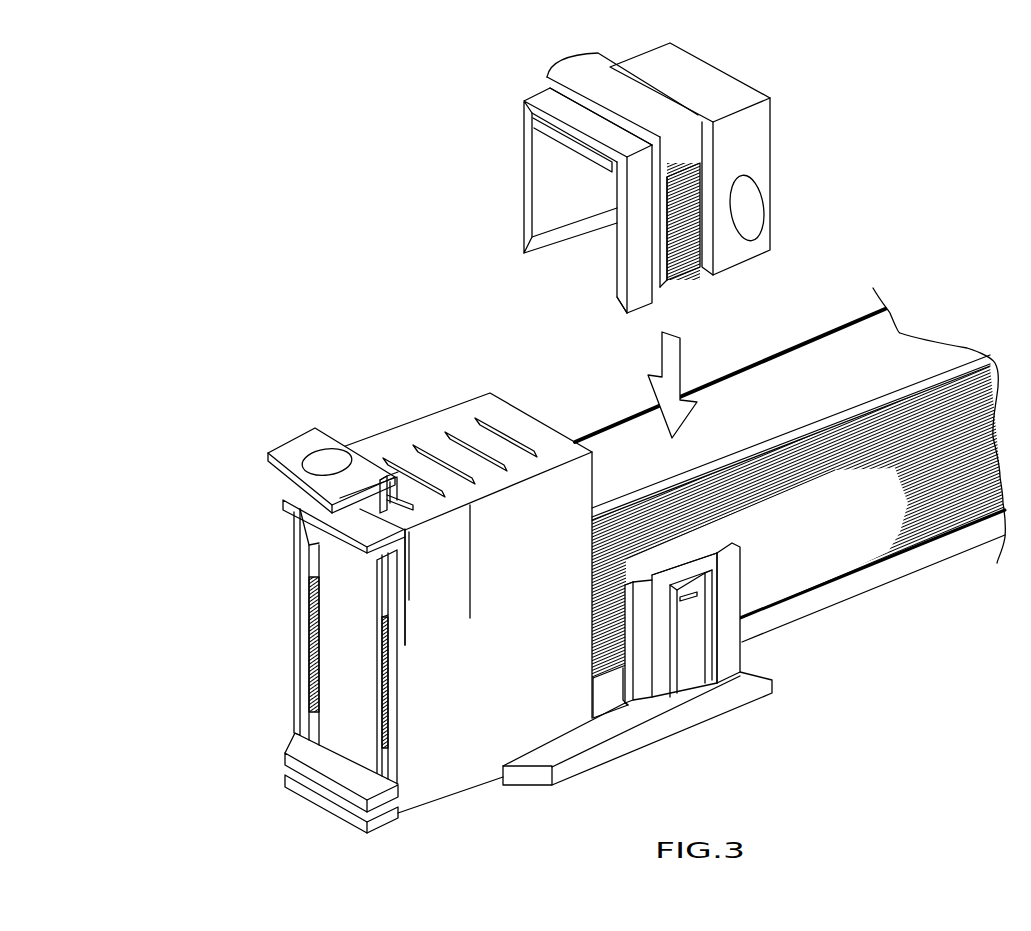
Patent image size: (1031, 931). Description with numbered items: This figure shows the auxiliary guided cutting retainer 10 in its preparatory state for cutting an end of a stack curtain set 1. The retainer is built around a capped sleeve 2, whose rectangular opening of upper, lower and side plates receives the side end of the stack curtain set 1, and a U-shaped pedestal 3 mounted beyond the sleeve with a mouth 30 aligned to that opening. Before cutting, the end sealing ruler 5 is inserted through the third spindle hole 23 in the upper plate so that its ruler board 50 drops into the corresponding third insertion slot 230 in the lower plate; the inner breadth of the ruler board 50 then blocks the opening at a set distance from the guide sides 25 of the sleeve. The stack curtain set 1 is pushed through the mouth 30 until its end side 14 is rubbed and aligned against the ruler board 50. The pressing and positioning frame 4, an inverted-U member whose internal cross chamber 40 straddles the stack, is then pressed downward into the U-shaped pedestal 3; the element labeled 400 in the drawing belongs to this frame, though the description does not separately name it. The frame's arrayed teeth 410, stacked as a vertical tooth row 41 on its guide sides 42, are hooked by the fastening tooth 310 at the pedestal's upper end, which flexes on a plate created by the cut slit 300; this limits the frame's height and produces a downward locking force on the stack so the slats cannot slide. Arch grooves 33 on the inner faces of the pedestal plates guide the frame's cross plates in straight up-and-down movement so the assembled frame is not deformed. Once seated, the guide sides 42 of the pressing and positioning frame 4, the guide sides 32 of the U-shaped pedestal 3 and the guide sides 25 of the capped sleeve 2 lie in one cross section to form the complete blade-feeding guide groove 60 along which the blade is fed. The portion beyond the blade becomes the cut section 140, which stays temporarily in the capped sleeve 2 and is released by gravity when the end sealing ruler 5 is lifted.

The stack curtain set 1 is at (891, 350).
The capped sleeve 2 is at (467, 418).
The U-shaped pedestal 3 is at (405, 645).
The pressing and positioning frame 4 is at (641, 175).
The end sealing ruler 5 is at (333, 437).
The auxiliary guided cutting retainer 10 is at (276, 583).
The end side 14 is at (315, 570).
The third spindle hole 23 is at (364, 497).
The guide sides 25 is at (593, 638).
The mouth 30 is at (733, 590).
The guide sides 32 is at (633, 643).
The arch grooves 33 is at (678, 560).
The cross chamber 40 is at (533, 200).
The vertical tooth row 41 is at (665, 203).
The guide sides 42 is at (623, 235).
The ruler board 50 is at (338, 643).
The blade-feeding guide groove 60 is at (622, 703).
The cut section 140 is at (316, 537).
The third insertion slot 230 is at (338, 760).
The cut slit 300 is at (708, 653).
The fastening tooth 310 is at (680, 599).
The tongue plate 400 is at (573, 147).
The arrayed teeth 410 is at (693, 173).